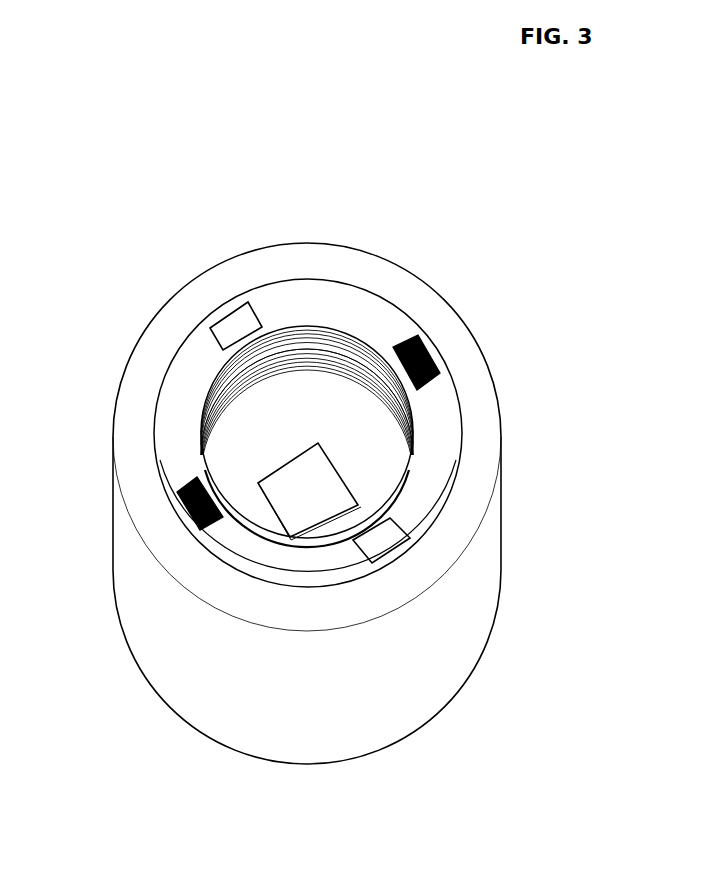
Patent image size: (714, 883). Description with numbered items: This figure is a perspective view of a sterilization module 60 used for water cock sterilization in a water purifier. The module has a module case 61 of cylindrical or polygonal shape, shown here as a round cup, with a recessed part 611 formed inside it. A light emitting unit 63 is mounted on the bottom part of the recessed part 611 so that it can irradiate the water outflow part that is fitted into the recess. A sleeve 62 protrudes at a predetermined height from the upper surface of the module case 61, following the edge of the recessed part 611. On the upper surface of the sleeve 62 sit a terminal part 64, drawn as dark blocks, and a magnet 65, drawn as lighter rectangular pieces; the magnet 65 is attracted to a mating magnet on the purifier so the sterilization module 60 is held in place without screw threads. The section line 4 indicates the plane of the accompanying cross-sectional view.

The sterilization module 60 is at (426, 204).
The module case 61 is at (493, 553).
The recessed part 611 is at (305, 421).
The sleeve 62 is at (443, 478).
The light emitting unit 63 is at (327, 470).
The terminal part 64 is at (443, 360).
The magnet 65 is at (232, 325).
The section line 4 is at (480, 332).